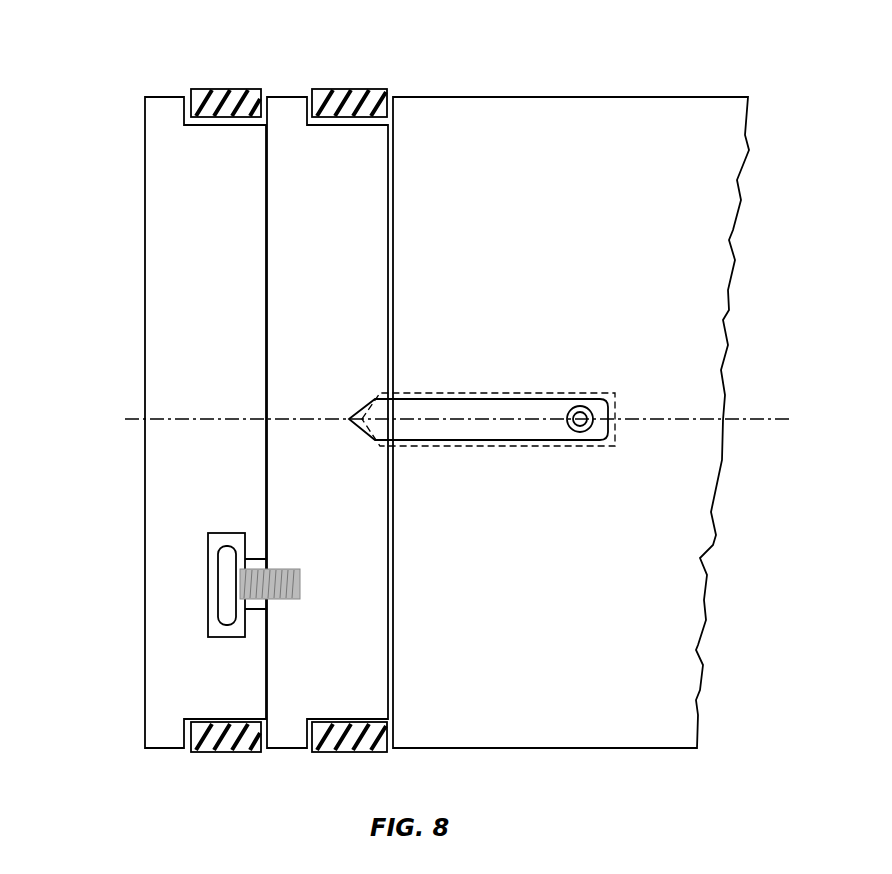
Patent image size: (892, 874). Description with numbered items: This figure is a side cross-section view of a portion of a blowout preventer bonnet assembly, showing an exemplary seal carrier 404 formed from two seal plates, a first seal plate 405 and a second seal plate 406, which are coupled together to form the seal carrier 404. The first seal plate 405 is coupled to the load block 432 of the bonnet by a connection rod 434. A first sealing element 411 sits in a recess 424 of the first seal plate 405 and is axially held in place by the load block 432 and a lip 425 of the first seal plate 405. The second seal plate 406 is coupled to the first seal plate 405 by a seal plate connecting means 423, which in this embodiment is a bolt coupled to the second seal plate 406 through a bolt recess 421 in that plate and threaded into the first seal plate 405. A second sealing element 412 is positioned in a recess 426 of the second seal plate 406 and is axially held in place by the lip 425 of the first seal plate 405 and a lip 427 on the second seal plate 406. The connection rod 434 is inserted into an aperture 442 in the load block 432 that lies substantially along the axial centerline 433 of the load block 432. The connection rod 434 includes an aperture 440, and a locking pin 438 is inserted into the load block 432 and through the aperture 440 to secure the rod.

The seal carrier 404 is at (122, 252).
The first seal plate 405 is at (346, 308).
The second seal plate 406 is at (222, 308).
The first sealing element 411 is at (345, 89).
The second sealing element 412 is at (222, 89).
The bolt recess 421 is at (210, 615).
The seal plate connecting means 423 is at (225, 577).
The recess 424 is at (348, 126).
The lip 425 is at (300, 96).
The recess 426 is at (222, 126).
The lip 427 is at (168, 97).
The load block 432 is at (636, 263).
The axial centerline 433 is at (757, 419).
The connection rod 434 is at (523, 412).
The locking pin 438 is at (582, 426).
The aperture 440 is at (580, 406).
The aperture 442 is at (425, 393).